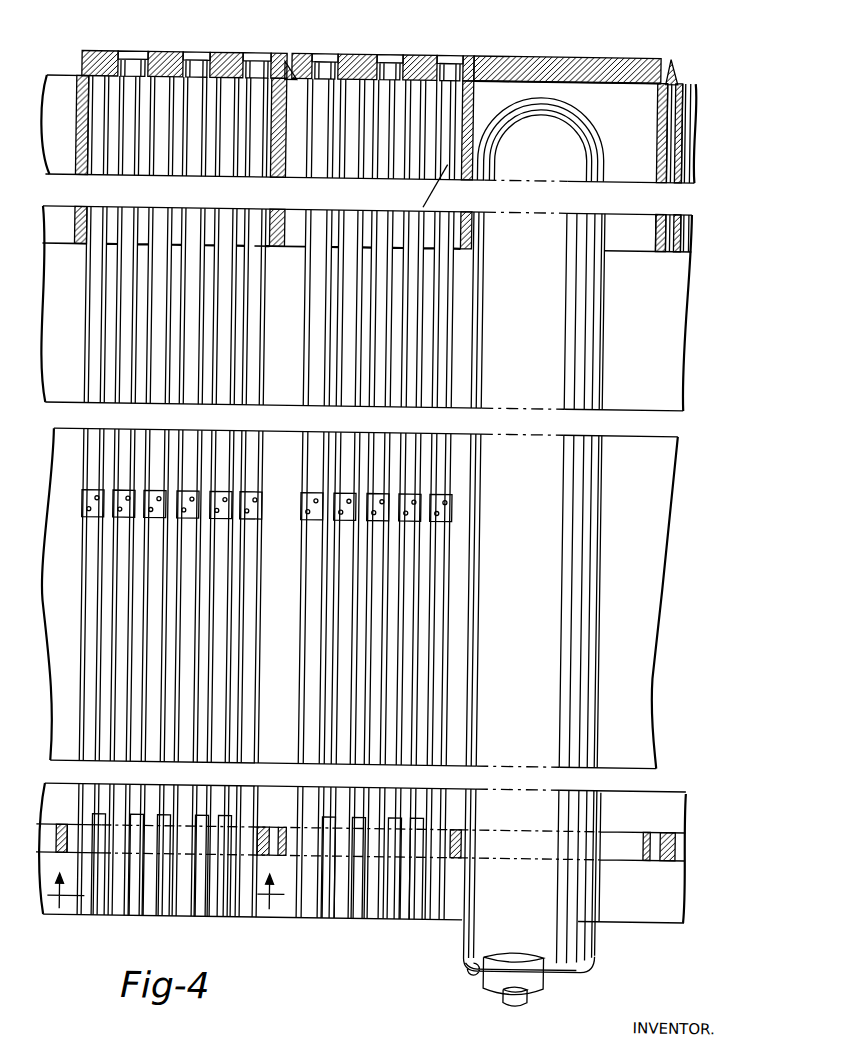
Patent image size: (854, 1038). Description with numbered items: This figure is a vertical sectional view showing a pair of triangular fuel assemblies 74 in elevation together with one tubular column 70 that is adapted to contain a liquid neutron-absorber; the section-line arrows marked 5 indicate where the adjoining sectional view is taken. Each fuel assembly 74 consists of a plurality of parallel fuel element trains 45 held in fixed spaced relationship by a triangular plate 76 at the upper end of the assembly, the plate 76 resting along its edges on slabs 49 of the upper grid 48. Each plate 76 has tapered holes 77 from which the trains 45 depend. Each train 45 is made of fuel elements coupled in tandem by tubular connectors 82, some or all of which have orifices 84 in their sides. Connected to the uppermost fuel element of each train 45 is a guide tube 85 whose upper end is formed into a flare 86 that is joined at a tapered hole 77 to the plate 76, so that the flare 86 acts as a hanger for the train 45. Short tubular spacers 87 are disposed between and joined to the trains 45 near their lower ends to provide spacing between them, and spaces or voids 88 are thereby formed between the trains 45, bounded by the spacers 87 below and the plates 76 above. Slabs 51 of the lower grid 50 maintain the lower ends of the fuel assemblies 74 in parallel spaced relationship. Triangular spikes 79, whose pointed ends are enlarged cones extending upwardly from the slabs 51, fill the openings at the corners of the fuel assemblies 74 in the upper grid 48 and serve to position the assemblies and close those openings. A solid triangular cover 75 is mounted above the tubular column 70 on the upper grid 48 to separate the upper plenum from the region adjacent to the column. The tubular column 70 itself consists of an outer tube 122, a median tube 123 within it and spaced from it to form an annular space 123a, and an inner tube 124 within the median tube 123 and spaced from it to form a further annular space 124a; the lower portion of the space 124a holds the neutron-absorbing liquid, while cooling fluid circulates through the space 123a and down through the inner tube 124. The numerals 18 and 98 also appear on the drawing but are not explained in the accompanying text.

The flare 86 is at (125, 52).
The triangular plate 76 is at (164, 54).
The tapered holes 77 is at (244, 52).
The triangular spikes 79 is at (284, 60).
The triangular fuel assemblies 74 is at (392, 37).
The solid triangular cover 75 is at (611, 54).
The upper grid 48 is at (700, 70).
The slabs 49 is at (683, 130).
The guide tube 85 is at (129, 134).
The spacer 18 is at (665, 235).
The tubular column 70 is at (609, 295).
The orifices 84 is at (92, 506).
The tubular connectors 82 is at (309, 500).
The fuel element trains 45 is at (156, 623).
The spaces or voids 88 is at (142, 674).
The lower grid 50 is at (647, 819).
The slabs 51 is at (679, 837).
The base member 98 is at (92, 862).
The short tubular spacers 87 is at (225, 910).
The outer tube 122 is at (488, 932).
The annular space 123a is at (503, 963).
The median tube 123 is at (515, 970).
The annular space 124a is at (530, 984).
The inner tube 124 is at (528, 994).
The section line 5 is at (166, 912).